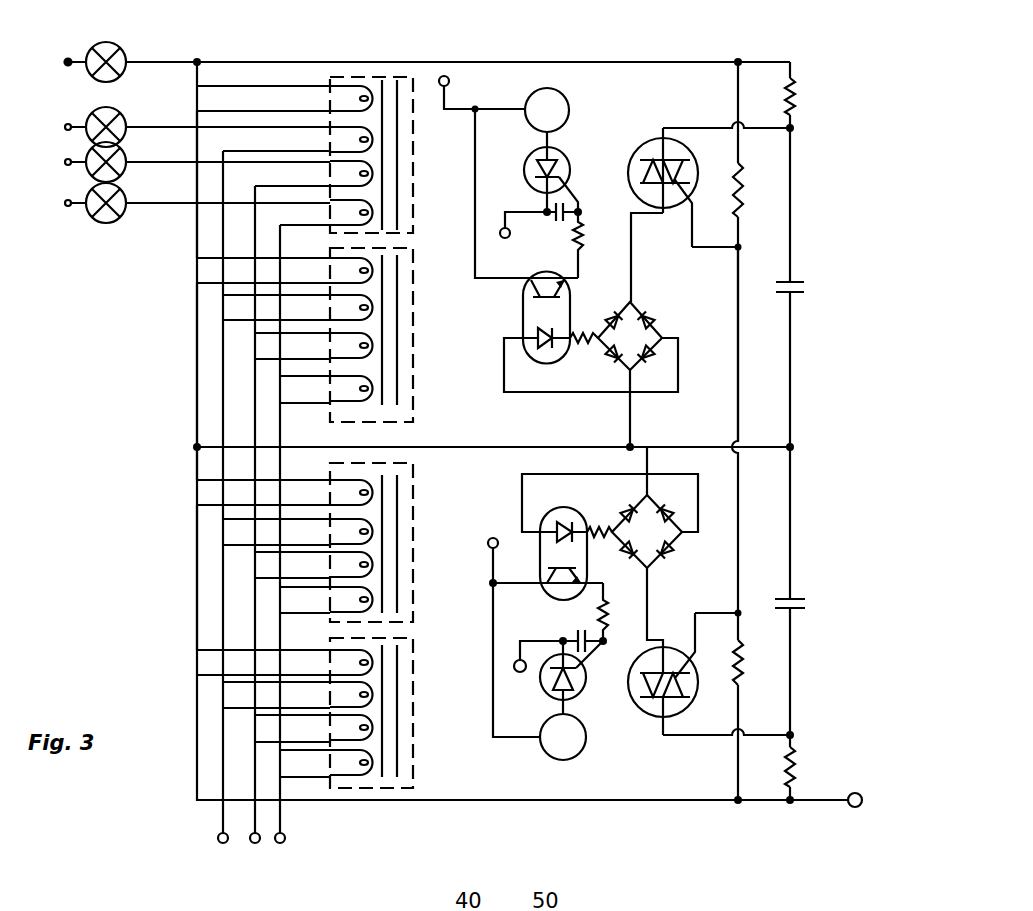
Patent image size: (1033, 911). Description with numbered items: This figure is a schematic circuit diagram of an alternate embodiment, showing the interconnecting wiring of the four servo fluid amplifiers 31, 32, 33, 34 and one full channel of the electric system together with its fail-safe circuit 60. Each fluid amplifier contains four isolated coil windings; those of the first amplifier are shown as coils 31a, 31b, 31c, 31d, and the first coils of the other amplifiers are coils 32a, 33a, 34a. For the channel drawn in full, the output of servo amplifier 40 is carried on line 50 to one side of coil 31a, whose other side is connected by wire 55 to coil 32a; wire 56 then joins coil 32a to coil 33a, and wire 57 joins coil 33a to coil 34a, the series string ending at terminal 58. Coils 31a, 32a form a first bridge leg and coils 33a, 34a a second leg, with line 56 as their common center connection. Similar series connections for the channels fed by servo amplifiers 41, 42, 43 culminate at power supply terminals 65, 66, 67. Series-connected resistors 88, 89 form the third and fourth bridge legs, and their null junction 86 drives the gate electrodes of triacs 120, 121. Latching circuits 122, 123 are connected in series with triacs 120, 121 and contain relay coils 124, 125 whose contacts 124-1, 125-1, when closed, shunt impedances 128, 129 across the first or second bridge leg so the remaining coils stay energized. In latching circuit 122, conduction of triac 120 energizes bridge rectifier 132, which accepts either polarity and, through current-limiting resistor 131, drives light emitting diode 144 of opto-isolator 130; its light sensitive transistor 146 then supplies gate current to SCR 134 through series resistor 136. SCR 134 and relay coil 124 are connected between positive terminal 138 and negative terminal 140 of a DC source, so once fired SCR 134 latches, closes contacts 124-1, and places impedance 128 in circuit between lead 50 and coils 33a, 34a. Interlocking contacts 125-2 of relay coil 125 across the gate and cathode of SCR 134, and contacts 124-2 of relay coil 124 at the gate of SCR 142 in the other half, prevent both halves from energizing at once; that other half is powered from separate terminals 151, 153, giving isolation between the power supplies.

The servo amplifier 40 is at (116, 46).
The servo amplifier 41 is at (122, 121).
The servo amplifier 42 is at (122, 170).
The servo amplifier 43 is at (123, 203).
The fluid amplifier 31 is at (399, 123).
The coil winding 31a is at (372, 109).
The coil winding 31b is at (373, 148).
The coil winding 31c is at (373, 180).
The coil winding 31d is at (373, 221).
The fluid amplifier 32 is at (399, 335).
The coil winding 32a is at (372, 269).
The fluid amplifier 33 is at (404, 539).
The coil winding 33a is at (373, 482).
The fluid amplifier 34 is at (401, 711).
The coil winding 34a is at (371, 655).
The wire 55 is at (197, 240).
The wire 56 is at (197, 378).
The wire 57 is at (197, 587).
The power supply terminal 65 is at (222, 844).
The power supply terminal 66 is at (255, 844).
The power supply terminal 67 is at (282, 844).
The line 50 is at (625, 62).
The fail-safe circuit 60 is at (803, 167).
The impedance 128 is at (803, 78).
The relay contacts 124-1 is at (800, 290).
The relay contacts 125-1 is at (807, 605).
The impedance 129 is at (797, 773).
The terminal 58 is at (862, 790).
The resistor 88 is at (737, 188).
The resistor 89 is at (740, 673).
The null junction 86 is at (737, 402).
The positive terminal 138 is at (450, 81).
The relay coil 124 is at (569, 101).
The SCR 134 is at (568, 167).
The resistor 136 is at (581, 232).
The negative terminal 140 is at (518, 241).
The resistor 125-2 is at (553, 222).
The opto-isolator 130 is at (546, 324).
The light sensitive transistor 146 is at (557, 293).
The light emitting diode 144 is at (550, 347).
The current-limiting resistor 131 is at (590, 347).
The latching circuit 122 is at (636, 286).
The bridge rectifier 132 is at (663, 325).
The triac 120 is at (650, 150).
The latching circuit 123 is at (660, 567).
The power supply terminal 151 is at (497, 538).
The relay contacts 124-2 is at (575, 637).
The power supply terminal 153 is at (532, 680).
The SCR 142 is at (572, 683).
The relay coil 125 is at (547, 740).
The triac 121 is at (653, 710).